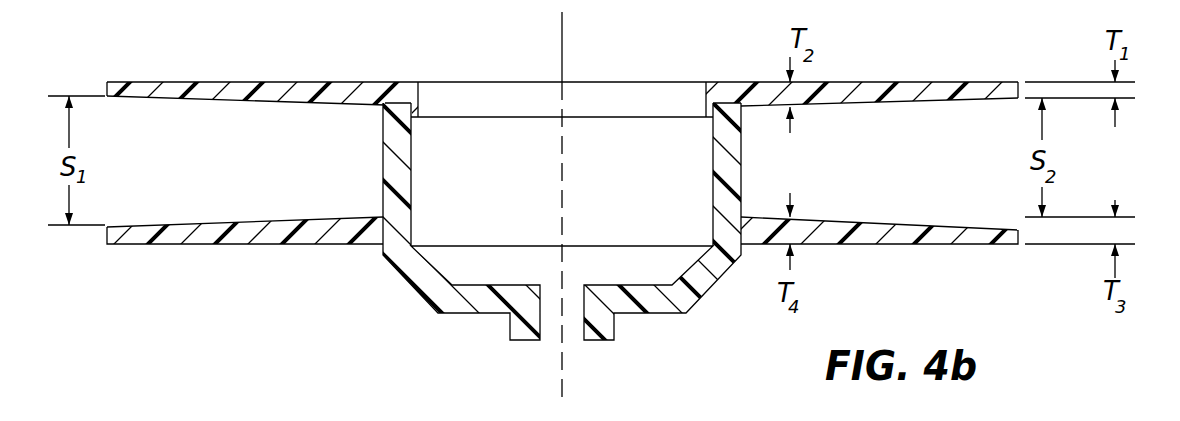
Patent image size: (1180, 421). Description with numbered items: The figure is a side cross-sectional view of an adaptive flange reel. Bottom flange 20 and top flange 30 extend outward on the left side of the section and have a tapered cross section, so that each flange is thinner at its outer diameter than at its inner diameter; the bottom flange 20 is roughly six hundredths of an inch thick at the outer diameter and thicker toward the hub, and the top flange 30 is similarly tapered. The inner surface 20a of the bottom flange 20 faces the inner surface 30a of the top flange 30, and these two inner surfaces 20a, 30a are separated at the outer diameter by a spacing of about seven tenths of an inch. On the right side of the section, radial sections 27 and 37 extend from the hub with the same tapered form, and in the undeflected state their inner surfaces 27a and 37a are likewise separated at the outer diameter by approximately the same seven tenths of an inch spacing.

The bottom flange 20 is at (308, 82).
The inner surface of bottom flange 20a is at (207, 100).
The radial section 27 is at (938, 83).
The inner surface of radial section 27a is at (863, 100).
The top flange 30 is at (270, 245).
The inner surface of top flange 30a is at (270, 218).
The radial section 37 is at (902, 244).
The inner surface of radial section 37a is at (822, 217).